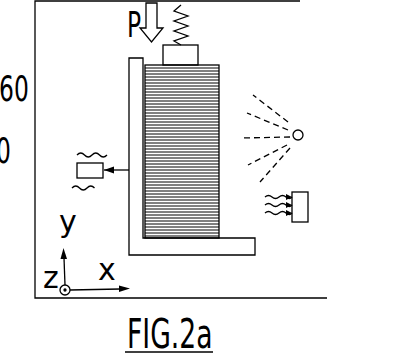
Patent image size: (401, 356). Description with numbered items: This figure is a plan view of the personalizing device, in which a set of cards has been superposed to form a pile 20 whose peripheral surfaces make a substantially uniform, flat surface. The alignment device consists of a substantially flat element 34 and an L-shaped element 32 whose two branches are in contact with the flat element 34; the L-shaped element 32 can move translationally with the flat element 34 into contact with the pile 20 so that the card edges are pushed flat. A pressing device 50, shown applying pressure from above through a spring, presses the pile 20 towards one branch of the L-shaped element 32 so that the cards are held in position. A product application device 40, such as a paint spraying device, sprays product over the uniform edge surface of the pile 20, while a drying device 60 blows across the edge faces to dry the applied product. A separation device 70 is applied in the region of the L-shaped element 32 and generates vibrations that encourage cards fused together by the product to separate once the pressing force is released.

The pile 20 is at (230, 79).
The L-shaped element 32 is at (180, 250).
The flat element 34 is at (287, 263).
The product application device 40 is at (317, 115).
The pressing device 50 is at (188, 58).
The drying device 60 is at (308, 202).
The separation device 70 is at (78, 163).